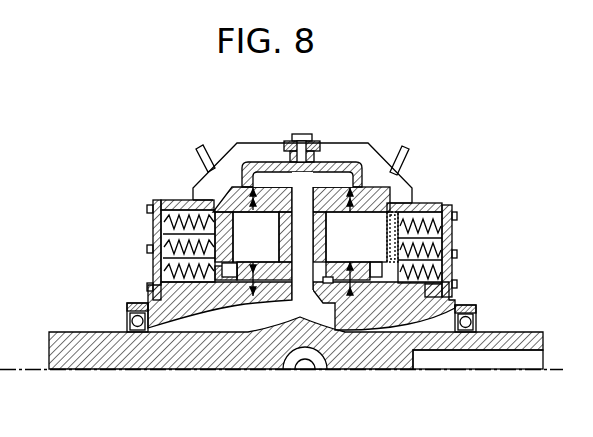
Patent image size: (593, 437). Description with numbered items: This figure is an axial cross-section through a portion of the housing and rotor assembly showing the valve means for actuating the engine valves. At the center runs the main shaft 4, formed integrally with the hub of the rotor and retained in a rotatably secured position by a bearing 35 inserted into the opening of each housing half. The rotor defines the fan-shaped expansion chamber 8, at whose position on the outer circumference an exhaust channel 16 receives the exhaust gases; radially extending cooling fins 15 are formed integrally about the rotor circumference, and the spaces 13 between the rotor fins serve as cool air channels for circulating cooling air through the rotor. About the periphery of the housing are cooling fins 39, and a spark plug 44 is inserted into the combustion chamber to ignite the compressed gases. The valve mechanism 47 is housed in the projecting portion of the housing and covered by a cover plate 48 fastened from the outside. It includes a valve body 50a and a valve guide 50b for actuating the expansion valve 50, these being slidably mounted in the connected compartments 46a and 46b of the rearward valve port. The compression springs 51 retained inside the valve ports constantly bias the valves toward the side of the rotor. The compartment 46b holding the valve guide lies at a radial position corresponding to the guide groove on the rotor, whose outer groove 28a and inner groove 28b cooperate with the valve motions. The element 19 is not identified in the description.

The main shaft 4 is at (88, 332).
The expansion chamber 8 is at (327, 230).
The cool air channels 13 is at (270, 313).
The cooling fins 15 is at (300, 212).
The exhaust channel 16 is at (253, 190).
The support plate 19 is at (470, 360).
The outer groove 28a is at (350, 266).
The inner groove 28b is at (350, 292).
The bearing 35 is at (472, 320).
The cooling fins 39 is at (375, 163).
The spark plug 44 is at (200, 152).
The compartment 46a is at (352, 233).
The compartment 46b is at (395, 283).
The valve mechanism 47 is at (172, 255).
The cover plate 48 is at (452, 275).
The expansion valve 50 is at (430, 242).
The valve body 50a is at (400, 225).
The valve guide 50b is at (452, 258).
The compression springs 51 is at (173, 247).